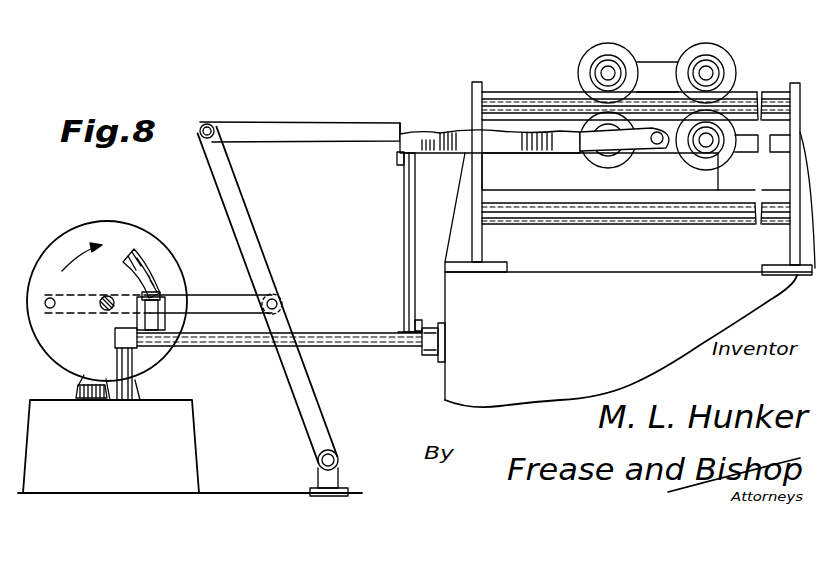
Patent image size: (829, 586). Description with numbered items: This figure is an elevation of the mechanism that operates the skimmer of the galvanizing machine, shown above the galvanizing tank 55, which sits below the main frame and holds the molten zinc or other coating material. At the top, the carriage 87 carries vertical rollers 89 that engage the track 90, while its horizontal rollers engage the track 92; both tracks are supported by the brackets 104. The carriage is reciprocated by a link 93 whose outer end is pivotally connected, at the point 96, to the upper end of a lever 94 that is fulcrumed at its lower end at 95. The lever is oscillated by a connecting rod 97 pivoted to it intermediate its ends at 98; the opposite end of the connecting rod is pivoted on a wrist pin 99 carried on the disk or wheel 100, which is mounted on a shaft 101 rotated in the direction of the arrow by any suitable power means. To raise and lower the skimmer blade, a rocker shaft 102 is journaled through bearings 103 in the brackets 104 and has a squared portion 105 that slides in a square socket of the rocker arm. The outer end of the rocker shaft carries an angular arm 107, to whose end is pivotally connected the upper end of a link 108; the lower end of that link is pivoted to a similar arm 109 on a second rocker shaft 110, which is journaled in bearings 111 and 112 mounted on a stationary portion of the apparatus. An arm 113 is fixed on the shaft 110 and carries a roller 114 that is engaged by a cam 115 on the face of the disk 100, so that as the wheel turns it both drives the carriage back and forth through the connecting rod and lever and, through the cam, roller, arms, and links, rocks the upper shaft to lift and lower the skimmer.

The galvanizing tank 55 is at (447, 388).
The carriage 87 is at (670, 68).
The vertical rollers 89 is at (598, 118).
The track 90 is at (538, 100).
The track 92 is at (570, 214).
The link 93 is at (390, 128).
The lever 94 is at (257, 242).
The fulcrum 95 is at (339, 459).
The pivotal connection 96 is at (211, 123).
The connecting rod 97 is at (216, 296).
The pivot 98 is at (282, 303).
The wrist pin 99 is at (50, 308).
The disk or wheel 100 is at (101, 235).
The shaft 101 is at (104, 310).
The rocker shaft 102 is at (445, 152).
The bearings 103 is at (490, 152).
The brackets 104 is at (482, 245).
The squared portion 105 is at (560, 150).
The angular arm 107 is at (404, 149).
The link 108 is at (404, 231).
The arm 109 is at (412, 326).
The rocker shaft 110 is at (374, 348).
The bearing 111 is at (428, 356).
The bearing 112 is at (134, 356).
The arm 113 is at (163, 320).
The roller 114 is at (152, 298).
The cam 115 is at (140, 262).